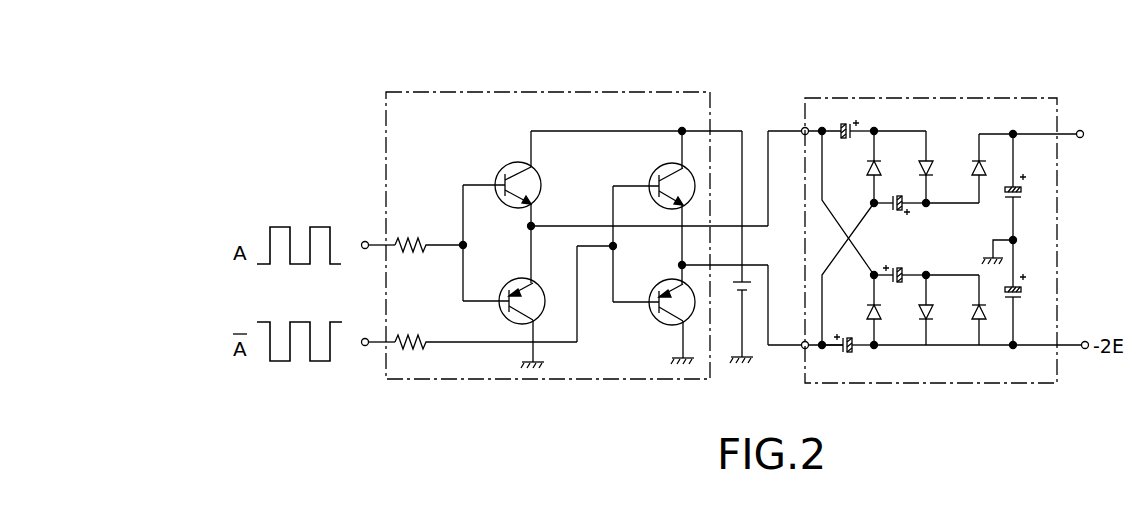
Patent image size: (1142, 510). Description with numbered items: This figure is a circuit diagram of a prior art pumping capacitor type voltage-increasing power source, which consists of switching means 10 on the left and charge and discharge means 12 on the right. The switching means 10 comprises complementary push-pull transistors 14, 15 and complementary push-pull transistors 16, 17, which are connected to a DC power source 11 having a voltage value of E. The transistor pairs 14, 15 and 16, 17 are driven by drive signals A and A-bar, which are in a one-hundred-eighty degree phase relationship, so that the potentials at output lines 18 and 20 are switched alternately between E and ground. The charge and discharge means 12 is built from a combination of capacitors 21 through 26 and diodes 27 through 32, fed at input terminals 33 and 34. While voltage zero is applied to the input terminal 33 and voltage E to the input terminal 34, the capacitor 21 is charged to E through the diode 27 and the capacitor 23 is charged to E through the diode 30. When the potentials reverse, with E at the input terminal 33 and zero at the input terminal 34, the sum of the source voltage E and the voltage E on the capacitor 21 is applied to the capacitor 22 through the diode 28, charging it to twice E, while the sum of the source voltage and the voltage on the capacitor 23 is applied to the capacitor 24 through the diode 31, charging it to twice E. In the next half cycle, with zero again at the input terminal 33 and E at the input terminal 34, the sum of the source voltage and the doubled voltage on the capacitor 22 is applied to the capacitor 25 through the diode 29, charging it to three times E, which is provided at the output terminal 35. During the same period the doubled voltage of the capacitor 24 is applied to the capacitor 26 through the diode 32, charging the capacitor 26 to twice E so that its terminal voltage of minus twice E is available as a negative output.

The switching means 10 is at (552, 72).
The DC power source 11 is at (751, 290).
The charge and discharge means 12 is at (897, 98).
The complementary push-pull transistor 14 is at (507, 170).
The complementary push-pull transistor 15 is at (505, 283).
The complementary push-pull transistor 16 is at (656, 170).
The complementary push-pull transistor 17 is at (657, 281).
The output line 18 is at (790, 128).
The output line 20 is at (794, 343).
The capacitor 21 is at (850, 126).
The capacitor 22 is at (897, 211).
The capacitor 23 is at (853, 353).
The capacitor 24 is at (905, 268).
The capacitor 25 is at (1006, 200).
The capacitor 26 is at (1018, 298).
The diode 27 is at (880, 170).
The diode 28 is at (932, 172).
The diode 29 is at (972, 172).
The diode 30 is at (868, 314).
The diode 31 is at (938, 315).
The diode 32 is at (972, 320).
The input terminal 33 is at (822, 128).
The input terminal 34 is at (808, 350).
The output terminal 35 is at (1079, 131).